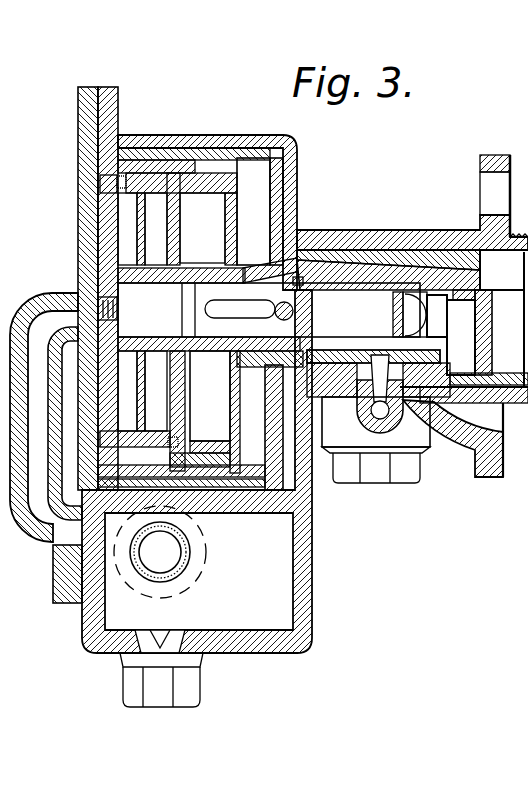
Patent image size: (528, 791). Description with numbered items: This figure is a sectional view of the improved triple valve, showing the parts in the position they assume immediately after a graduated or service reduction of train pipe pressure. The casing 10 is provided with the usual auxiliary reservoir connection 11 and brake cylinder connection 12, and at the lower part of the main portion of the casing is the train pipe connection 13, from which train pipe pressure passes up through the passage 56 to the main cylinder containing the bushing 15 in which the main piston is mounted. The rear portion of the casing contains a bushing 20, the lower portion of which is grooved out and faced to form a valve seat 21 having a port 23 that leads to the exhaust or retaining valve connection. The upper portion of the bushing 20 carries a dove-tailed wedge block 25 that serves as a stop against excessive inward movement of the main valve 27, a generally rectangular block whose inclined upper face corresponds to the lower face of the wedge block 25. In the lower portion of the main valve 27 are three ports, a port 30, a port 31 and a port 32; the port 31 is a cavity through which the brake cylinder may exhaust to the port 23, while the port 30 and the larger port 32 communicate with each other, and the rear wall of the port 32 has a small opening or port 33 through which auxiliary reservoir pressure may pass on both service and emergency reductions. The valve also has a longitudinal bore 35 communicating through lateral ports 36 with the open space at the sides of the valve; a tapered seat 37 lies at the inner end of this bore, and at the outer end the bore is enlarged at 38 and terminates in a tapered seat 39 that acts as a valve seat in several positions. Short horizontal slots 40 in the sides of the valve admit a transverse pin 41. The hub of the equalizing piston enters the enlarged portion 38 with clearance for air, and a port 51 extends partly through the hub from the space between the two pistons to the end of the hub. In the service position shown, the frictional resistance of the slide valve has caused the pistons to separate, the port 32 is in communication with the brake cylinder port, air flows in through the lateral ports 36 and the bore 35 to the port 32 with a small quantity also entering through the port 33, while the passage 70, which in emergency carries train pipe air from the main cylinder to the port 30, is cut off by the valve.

The casing 10 is at (409, 248).
The auxiliary reservoir connection 11 is at (22, 214).
The brake cylinder connection 12 is at (468, 478).
The train pipe connection 13 is at (190, 560).
The bushing 15 is at (152, 140).
The bushing 20 is at (428, 250).
The valve seat 21 is at (330, 400).
The port 23 is at (378, 425).
The wedge block 25 is at (0, 268).
The main valve 27 is at (352, 248).
The port 30 is at (300, 378).
The port 31 is at (350, 408).
The port 32 is at (458, 357).
The small opening or port 33 is at (494, 312).
The longitudinal bore 35 is at (328, 290).
The lateral ports 36 is at (412, 318).
The tapered seat 37 is at (458, 327).
The enlarged portion 38 is at (226, 358).
The tapered seat 39 is at (243, 265).
The horizontal slots 40 is at (280, 319).
The transverse pin 41 is at (180, 316).
The port 51 is at (330, 262).
The passage 56 is at (46, 525).
The passage 70 is at (210, 478).